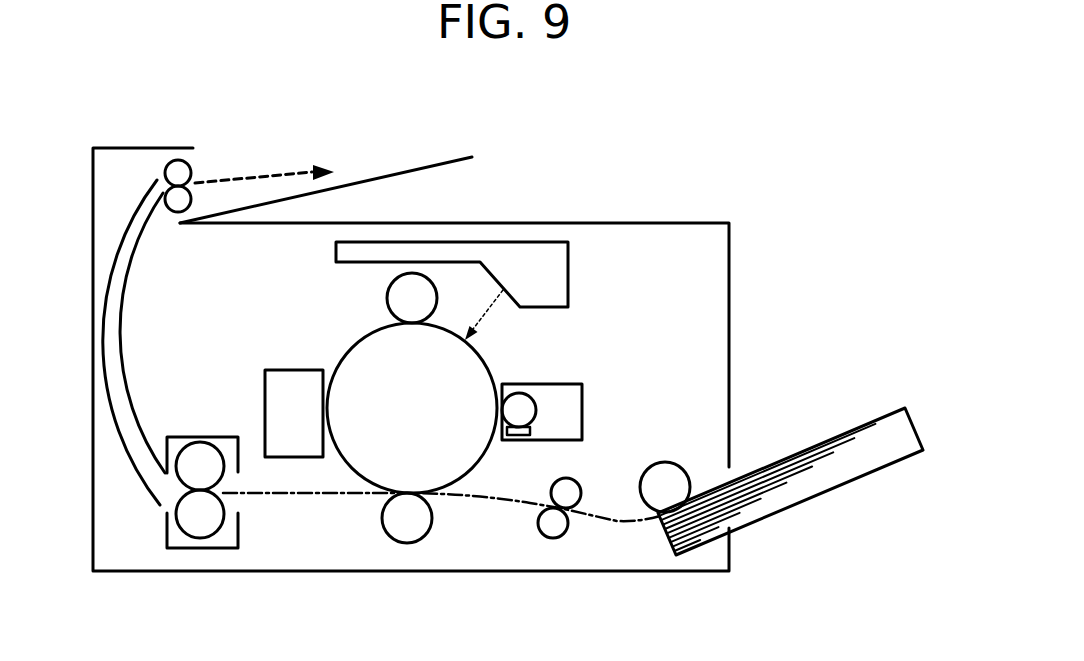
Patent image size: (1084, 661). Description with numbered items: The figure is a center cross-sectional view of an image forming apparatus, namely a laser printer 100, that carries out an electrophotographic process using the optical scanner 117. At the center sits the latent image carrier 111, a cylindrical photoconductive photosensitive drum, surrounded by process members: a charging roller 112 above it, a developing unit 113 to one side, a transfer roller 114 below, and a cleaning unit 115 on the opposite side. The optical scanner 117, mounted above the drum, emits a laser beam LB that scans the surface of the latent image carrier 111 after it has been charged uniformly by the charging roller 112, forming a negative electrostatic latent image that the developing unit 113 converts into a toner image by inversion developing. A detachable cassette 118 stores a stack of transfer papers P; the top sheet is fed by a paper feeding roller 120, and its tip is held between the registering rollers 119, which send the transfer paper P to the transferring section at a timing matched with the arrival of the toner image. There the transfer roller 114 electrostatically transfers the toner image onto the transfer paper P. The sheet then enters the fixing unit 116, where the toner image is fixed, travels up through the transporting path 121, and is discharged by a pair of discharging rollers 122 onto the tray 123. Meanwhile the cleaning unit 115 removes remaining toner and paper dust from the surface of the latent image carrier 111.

The laser printer 100 is at (728, 151).
The latent image carrier 111 is at (484, 376).
The charging roller 112 is at (390, 307).
The developing unit 113 is at (583, 396).
The transfer roller 114 is at (423, 517).
The cleaning unit 115 is at (283, 378).
The fixing unit 116 is at (238, 528).
The optical scanner 117 is at (565, 270).
The cassette 118 is at (783, 510).
The registering rollers 119 is at (562, 526).
The paper feeding roller 120 is at (665, 470).
The transporting path 121 is at (123, 348).
The discharging rollers 122 is at (171, 186).
The tray 123 is at (413, 168).
The laser beam LB is at (486, 312).
The transfer paper P is at (767, 468).